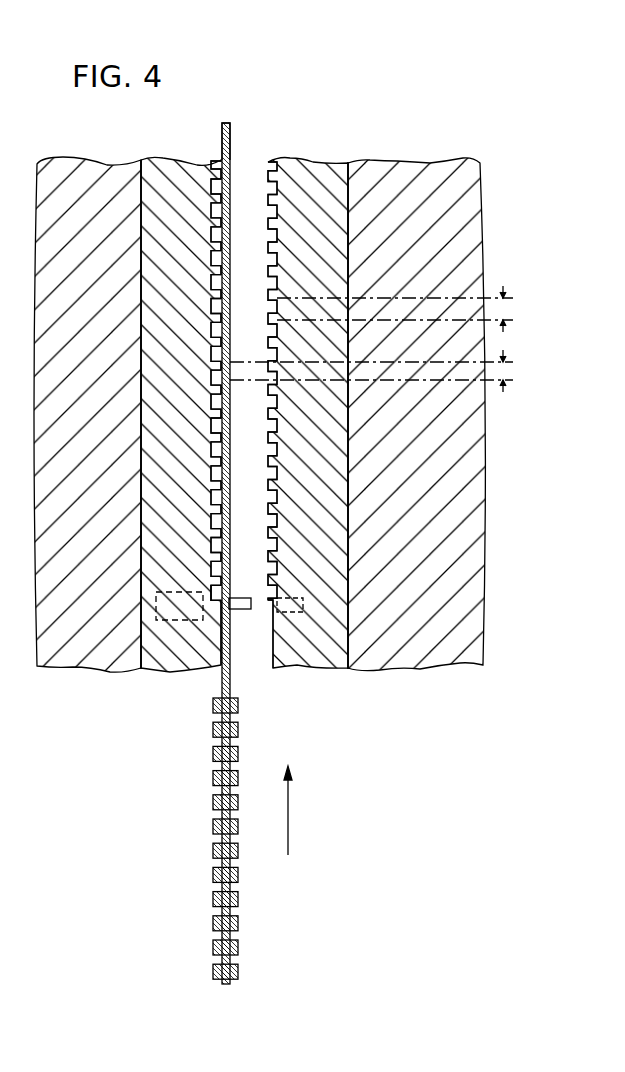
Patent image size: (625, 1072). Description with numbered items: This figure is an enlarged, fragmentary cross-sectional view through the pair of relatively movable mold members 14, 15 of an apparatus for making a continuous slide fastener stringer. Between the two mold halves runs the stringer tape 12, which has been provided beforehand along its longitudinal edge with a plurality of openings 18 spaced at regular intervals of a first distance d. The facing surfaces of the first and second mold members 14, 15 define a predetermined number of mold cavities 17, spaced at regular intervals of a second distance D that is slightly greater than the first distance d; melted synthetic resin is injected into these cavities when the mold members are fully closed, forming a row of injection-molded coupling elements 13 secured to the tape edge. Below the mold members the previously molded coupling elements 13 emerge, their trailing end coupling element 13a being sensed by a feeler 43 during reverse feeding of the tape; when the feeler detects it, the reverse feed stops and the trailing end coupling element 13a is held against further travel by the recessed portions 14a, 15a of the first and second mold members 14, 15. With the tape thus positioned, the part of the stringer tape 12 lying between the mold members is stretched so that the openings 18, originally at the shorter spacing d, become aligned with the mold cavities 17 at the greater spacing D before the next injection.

The stringer tape 12 is at (228, 163).
The injection-molded coupling elements 13 is at (213, 777).
The trailing end coupling element 13a is at (213, 703).
The first mold member 14 is at (155, 647).
The recessed portion of the first mold member 14a is at (217, 610).
The second mold member 15 is at (322, 653).
The recessed portion of the second mold member 15a is at (273, 607).
The mold cavities 17 is at (205, 207).
The openings 18 is at (227, 135).
The feeler 43 is at (241, 610).
The second distance D is at (405, 309).
The first distance d is at (380, 371).